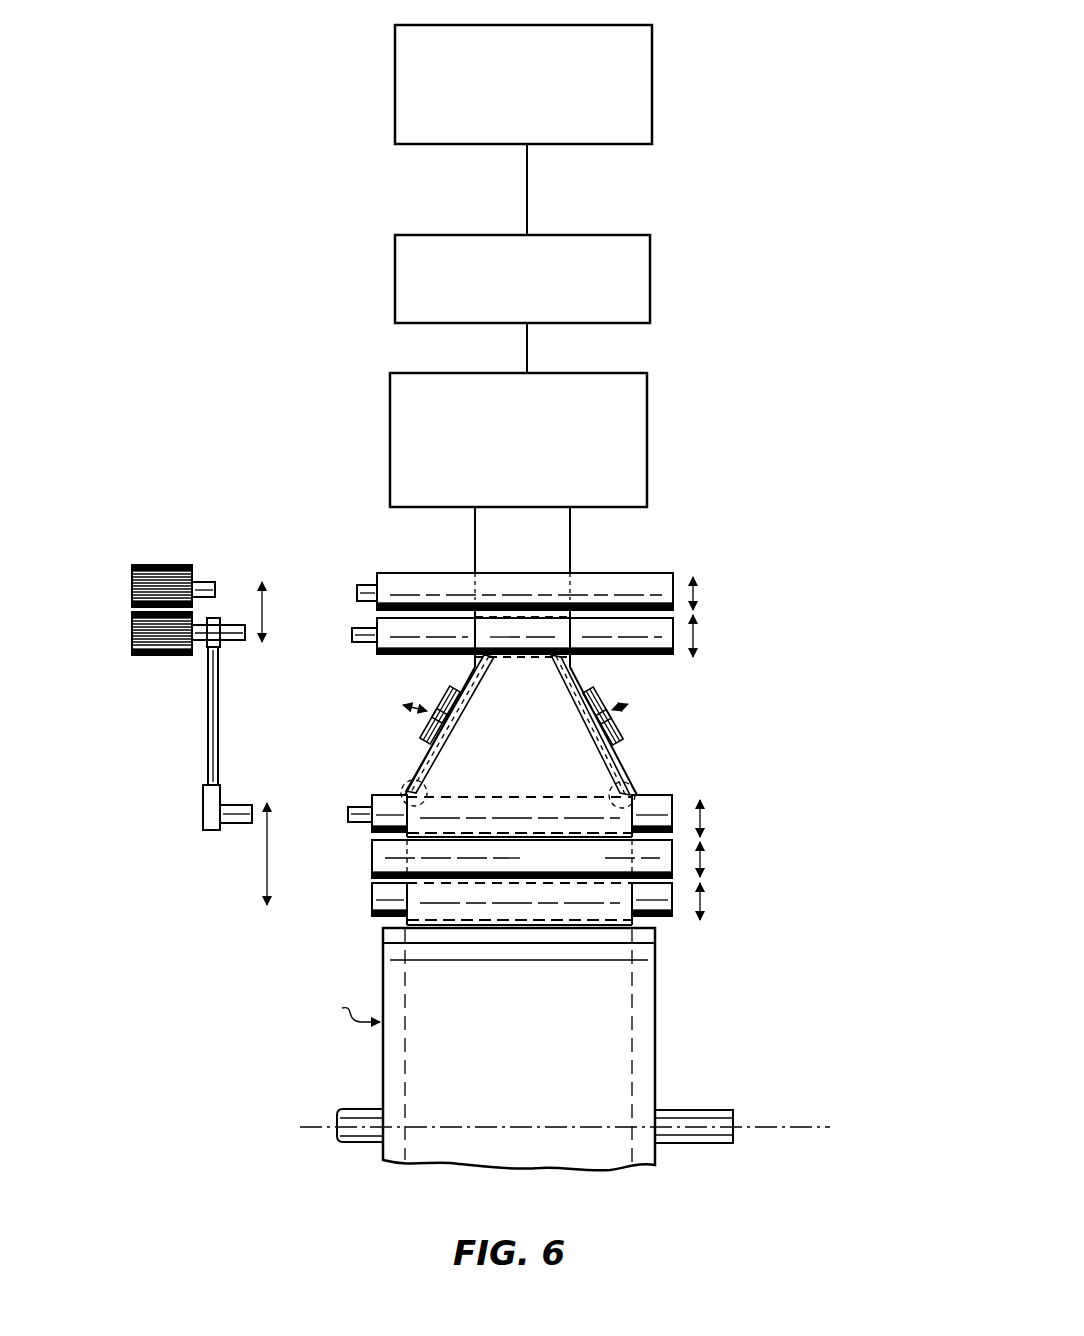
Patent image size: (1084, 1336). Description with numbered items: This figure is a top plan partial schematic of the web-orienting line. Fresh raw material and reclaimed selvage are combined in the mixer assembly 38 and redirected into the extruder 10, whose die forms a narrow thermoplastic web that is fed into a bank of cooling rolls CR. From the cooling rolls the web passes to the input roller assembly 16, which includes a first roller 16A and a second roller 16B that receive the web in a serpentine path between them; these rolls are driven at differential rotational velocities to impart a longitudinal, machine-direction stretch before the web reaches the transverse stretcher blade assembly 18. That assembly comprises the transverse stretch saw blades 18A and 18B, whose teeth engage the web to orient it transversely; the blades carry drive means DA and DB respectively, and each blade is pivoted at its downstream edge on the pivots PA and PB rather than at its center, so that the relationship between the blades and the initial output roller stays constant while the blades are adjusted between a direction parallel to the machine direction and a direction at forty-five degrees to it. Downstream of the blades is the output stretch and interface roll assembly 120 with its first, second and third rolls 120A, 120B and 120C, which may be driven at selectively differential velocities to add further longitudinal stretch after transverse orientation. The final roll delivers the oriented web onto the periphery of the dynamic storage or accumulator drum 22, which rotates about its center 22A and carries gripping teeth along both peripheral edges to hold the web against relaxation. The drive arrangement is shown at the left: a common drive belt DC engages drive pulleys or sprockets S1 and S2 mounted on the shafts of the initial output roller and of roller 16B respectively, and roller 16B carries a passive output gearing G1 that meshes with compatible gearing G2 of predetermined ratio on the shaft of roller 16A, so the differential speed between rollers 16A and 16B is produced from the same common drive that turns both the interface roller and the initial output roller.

The mixer assembly 38 is at (643, 65).
The extruder 10 is at (616, 316).
The cooling rolls CR is at (537, 497).
The input roller assembly 16 is at (566, 608).
The first roller 16A is at (623, 582).
The second roller 16B is at (618, 655).
The transverse stretcher blade assembly 18 is at (639, 725).
The transverse stretch saw blade 18A is at (616, 725).
The transverse stretch saw blade 18B is at (422, 724).
The drive means DA is at (697, 673).
The drive means DB is at (423, 735).
The pivot PA is at (632, 787).
The pivot PB is at (405, 785).
The output stretch and interface rolls 120 is at (601, 864).
The output stretch roll 120A is at (660, 808).
The output stretch roll 120B is at (600, 867).
The output stretch roll 120C is at (660, 926).
The dynamic storage or accumulator drum 22 is at (643, 1030).
The center 22A is at (780, 1127).
The passive output gearing G1 is at (132, 632).
The compatible gearing G2 is at (132, 585).
The drive pulley or sprocket S1 is at (203, 828).
The drive pulley or sprocket S2 is at (208, 650).
The common drive belt DC is at (208, 731).